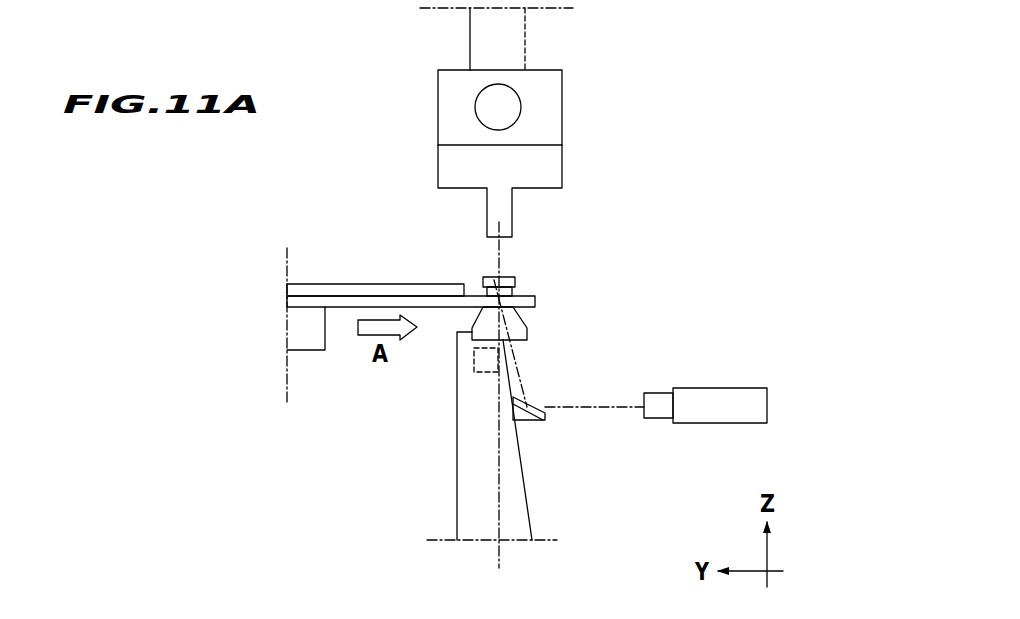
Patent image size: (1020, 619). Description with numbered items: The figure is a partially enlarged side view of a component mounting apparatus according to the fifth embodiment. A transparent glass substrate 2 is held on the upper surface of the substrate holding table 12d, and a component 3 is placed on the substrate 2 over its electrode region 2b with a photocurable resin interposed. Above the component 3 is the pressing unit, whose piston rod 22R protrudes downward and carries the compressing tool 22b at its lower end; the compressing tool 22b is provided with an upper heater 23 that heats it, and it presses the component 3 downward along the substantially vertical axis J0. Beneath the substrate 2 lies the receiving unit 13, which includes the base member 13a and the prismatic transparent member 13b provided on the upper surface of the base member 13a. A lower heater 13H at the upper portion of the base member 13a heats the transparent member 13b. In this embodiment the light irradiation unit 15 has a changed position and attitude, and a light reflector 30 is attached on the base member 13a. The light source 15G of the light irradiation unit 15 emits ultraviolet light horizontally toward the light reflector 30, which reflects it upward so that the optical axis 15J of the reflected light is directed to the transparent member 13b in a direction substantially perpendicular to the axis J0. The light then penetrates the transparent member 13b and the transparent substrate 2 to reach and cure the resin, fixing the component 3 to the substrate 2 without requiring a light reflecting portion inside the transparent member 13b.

The piston rod 22R is at (482, 38).
The upper heater 23 is at (523, 105).
The compressing tool 22b is at (553, 168).
The component 3 is at (515, 280).
The electrode / bump of substrate 2b is at (512, 292).
The substrate 2 is at (389, 263).
The substrate holding table 12d is at (292, 327).
The transparent member 13b is at (527, 330).
The base member 13a is at (463, 424).
The receiving unit 13 is at (450, 437).
The optical axis 15J is at (498, 362).
The lower heater 13H is at (419, 393).
The light reflector 30 is at (543, 420).
The light irradiation unit 15 is at (712, 396).
The light source 15G is at (660, 412).
The axis J0 is at (500, 555).